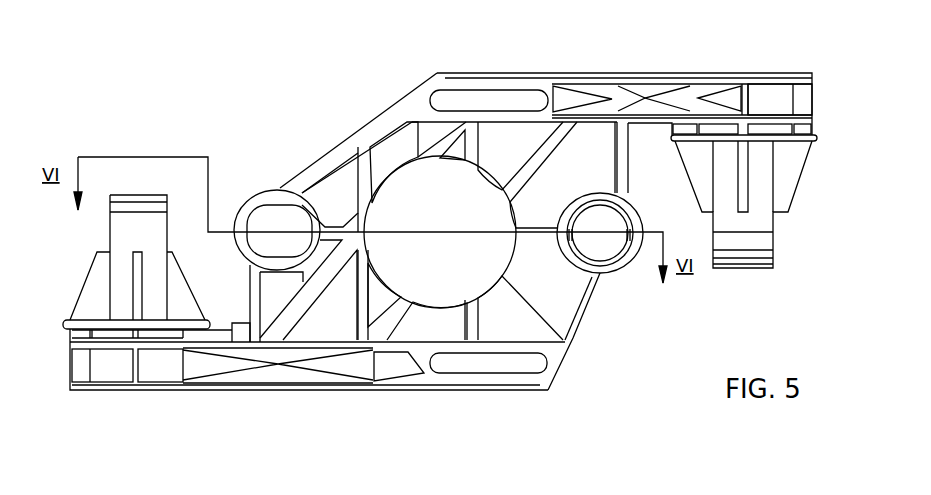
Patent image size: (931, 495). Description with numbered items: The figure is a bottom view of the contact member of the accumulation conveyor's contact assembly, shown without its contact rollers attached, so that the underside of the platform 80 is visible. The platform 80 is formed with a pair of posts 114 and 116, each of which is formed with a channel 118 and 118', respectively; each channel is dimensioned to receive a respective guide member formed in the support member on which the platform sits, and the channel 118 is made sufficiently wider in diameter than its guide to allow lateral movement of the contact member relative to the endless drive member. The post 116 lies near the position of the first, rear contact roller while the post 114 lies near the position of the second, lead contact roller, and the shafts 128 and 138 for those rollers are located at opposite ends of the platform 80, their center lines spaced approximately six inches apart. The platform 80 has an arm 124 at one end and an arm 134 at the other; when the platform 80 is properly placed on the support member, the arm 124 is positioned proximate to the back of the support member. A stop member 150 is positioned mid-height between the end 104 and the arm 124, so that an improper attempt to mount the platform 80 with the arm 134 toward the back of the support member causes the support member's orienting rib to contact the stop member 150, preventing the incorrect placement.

The platform 80 is at (540, 381).
The end 104 is at (258, 293).
The post 114 is at (242, 210).
The post 116 is at (623, 258).
The channel 118 is at (272, 199).
The channel 118' is at (613, 286).
The arm 124 is at (157, 392).
The shaft 128 is at (118, 238).
The arm 134 is at (670, 72).
The shaft 138 is at (775, 220).
The stop member 150 is at (243, 335).